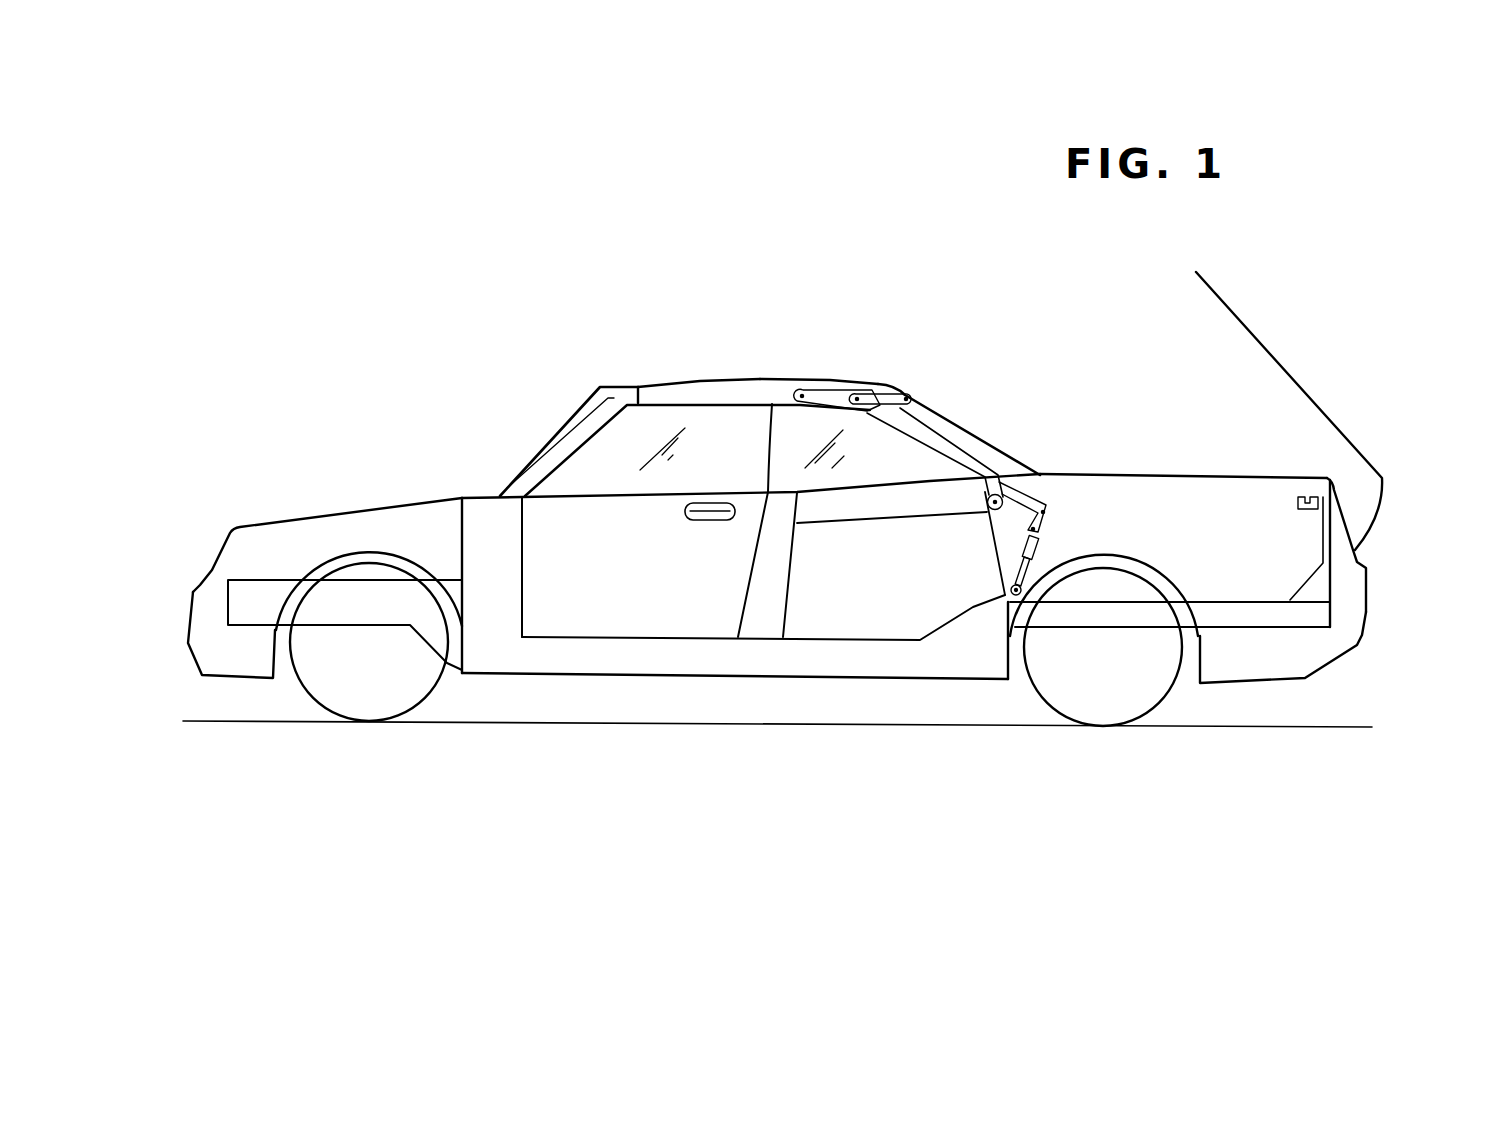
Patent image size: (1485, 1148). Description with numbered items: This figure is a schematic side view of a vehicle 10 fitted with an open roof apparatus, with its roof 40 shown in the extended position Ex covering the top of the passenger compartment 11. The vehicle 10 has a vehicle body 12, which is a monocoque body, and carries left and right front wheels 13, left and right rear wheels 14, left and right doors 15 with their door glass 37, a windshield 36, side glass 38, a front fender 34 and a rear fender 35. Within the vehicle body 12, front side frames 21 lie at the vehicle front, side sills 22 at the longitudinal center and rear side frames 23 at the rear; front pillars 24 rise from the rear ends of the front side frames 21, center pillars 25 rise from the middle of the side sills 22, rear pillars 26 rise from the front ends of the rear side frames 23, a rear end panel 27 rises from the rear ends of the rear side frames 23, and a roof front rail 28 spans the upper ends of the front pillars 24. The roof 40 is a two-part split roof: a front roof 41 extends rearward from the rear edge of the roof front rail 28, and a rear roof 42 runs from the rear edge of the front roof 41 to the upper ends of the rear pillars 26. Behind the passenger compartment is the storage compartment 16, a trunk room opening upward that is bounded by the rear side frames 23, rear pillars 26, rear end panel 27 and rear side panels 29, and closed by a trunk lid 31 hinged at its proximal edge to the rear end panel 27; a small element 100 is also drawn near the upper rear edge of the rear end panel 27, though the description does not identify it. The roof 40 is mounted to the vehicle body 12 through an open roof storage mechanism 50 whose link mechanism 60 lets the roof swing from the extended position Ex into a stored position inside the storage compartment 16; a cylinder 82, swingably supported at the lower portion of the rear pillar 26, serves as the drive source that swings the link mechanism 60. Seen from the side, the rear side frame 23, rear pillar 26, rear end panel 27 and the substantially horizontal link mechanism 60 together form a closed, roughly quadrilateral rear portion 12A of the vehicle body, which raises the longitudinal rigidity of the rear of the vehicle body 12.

The vehicle 10 is at (322, 260).
The passenger compartment 11 is at (597, 455).
The vehicle body 12 is at (238, 630).
The rear portion 12A is at (1352, 618).
The front wheels 13 is at (300, 686).
The rear wheels 14 is at (1043, 698).
The doors 15 is at (630, 606).
The storage compartment 16 is at (1218, 515).
The front side frames 21 is at (355, 617).
The side sills 22 is at (557, 657).
The rear side frames 23 is at (1135, 620).
The front pillars 24 is at (530, 477).
The center pillars 25 is at (757, 585).
The rear pillars 26 is at (1063, 533).
The rear end panel 27 is at (1330, 527).
The roof front rail 28 is at (620, 393).
The rear side panels 29 is at (1260, 581).
The trunk lid 31 is at (1283, 355).
The front fender 34 is at (277, 538).
The rear fender 35 is at (1312, 655).
The windshield 36 is at (570, 415).
The door glass 37 is at (740, 425).
The side glass 38 is at (813, 425).
The roof 40 is at (678, 373).
The front roof 41 is at (710, 385).
The rear roof 42 is at (988, 445).
The open roof storage mechanism 50 is at (937, 367).
The link mechanism 60 is at (945, 423).
The cylinder 82 is at (1007, 557).
The striker 100 is at (1310, 490).
The extended position Ex is at (788, 370).